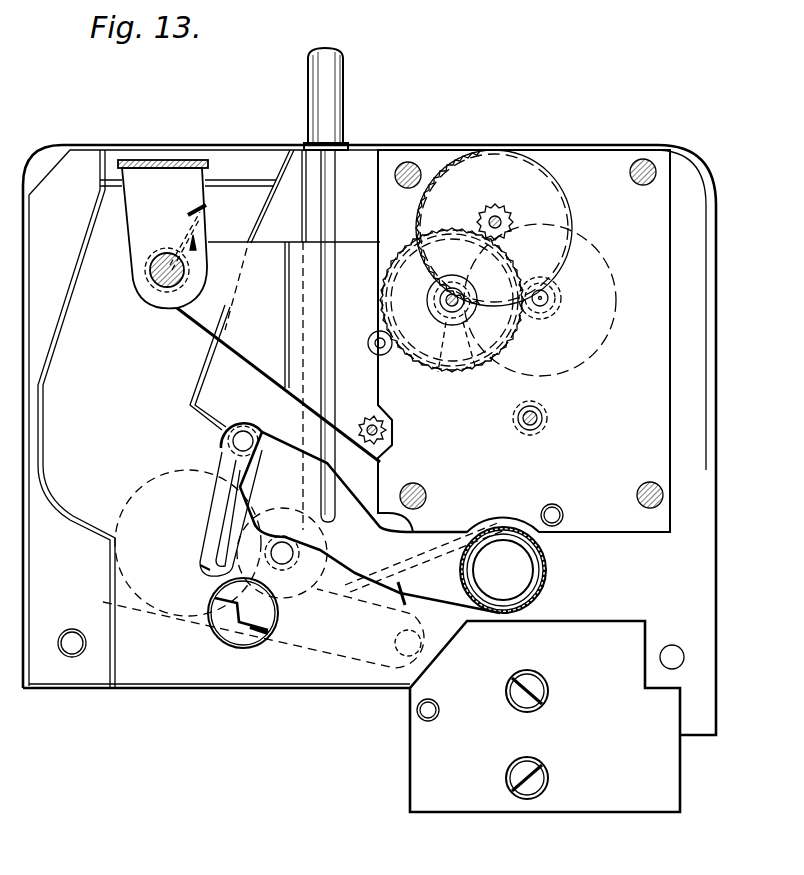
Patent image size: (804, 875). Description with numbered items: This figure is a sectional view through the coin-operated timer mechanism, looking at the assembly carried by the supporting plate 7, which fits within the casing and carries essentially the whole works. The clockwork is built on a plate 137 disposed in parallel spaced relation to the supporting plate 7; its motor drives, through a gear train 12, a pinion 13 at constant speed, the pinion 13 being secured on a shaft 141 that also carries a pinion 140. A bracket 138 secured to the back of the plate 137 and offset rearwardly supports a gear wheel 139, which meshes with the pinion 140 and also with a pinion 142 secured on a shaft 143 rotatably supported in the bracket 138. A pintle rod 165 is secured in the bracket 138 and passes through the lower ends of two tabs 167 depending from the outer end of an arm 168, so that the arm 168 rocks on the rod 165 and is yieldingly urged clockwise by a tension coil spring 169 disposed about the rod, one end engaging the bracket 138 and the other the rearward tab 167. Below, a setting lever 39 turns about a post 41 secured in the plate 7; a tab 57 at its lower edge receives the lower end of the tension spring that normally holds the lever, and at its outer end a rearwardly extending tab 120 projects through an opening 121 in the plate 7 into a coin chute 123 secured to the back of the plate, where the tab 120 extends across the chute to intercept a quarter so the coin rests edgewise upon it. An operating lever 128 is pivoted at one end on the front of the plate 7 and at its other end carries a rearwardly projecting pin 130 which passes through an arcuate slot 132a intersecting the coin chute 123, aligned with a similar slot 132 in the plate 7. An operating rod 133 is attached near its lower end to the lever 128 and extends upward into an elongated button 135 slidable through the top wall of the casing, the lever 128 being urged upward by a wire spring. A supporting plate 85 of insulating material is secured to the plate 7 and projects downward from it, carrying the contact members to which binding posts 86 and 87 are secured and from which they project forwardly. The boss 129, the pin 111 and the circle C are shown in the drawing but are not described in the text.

The supporting plate 7 is at (694, 566).
The gear train 12 is at (582, 213).
The pinion 13 is at (462, 274).
The setting lever 39 is at (338, 650).
The post 41 is at (283, 541).
The tab 57 is at (252, 638).
The supporting plate of insulating material 85 is at (426, 752).
The binding post 86 is at (548, 693).
The binding post 87 is at (535, 768).
The pivot pin 111 is at (425, 648).
The tab 120 is at (216, 604).
The opening 121 is at (212, 630).
The coin chute 123 is at (209, 419).
The operating lever 128 is at (357, 568).
The boss 129 is at (527, 571).
The pin 130 is at (232, 443).
The slot 132 is at (212, 512).
The arcuate slot 132a is at (200, 567).
The operating rod 133 is at (331, 218).
The button 135 is at (334, 90).
The plate 137 is at (558, 152).
The bracket 138 is at (268, 367).
The gear wheel 139 is at (306, 336).
The pinion 140 is at (475, 358).
The shaft 141 is at (447, 306).
The pinion 142 is at (390, 432).
The shaft 143 is at (392, 440).
The pintle rod 165 is at (150, 276).
The tab 167 is at (130, 205).
The arm 168 is at (190, 160).
The tension coil spring 169 is at (148, 302).
The circle of movement C is at (150, 600).